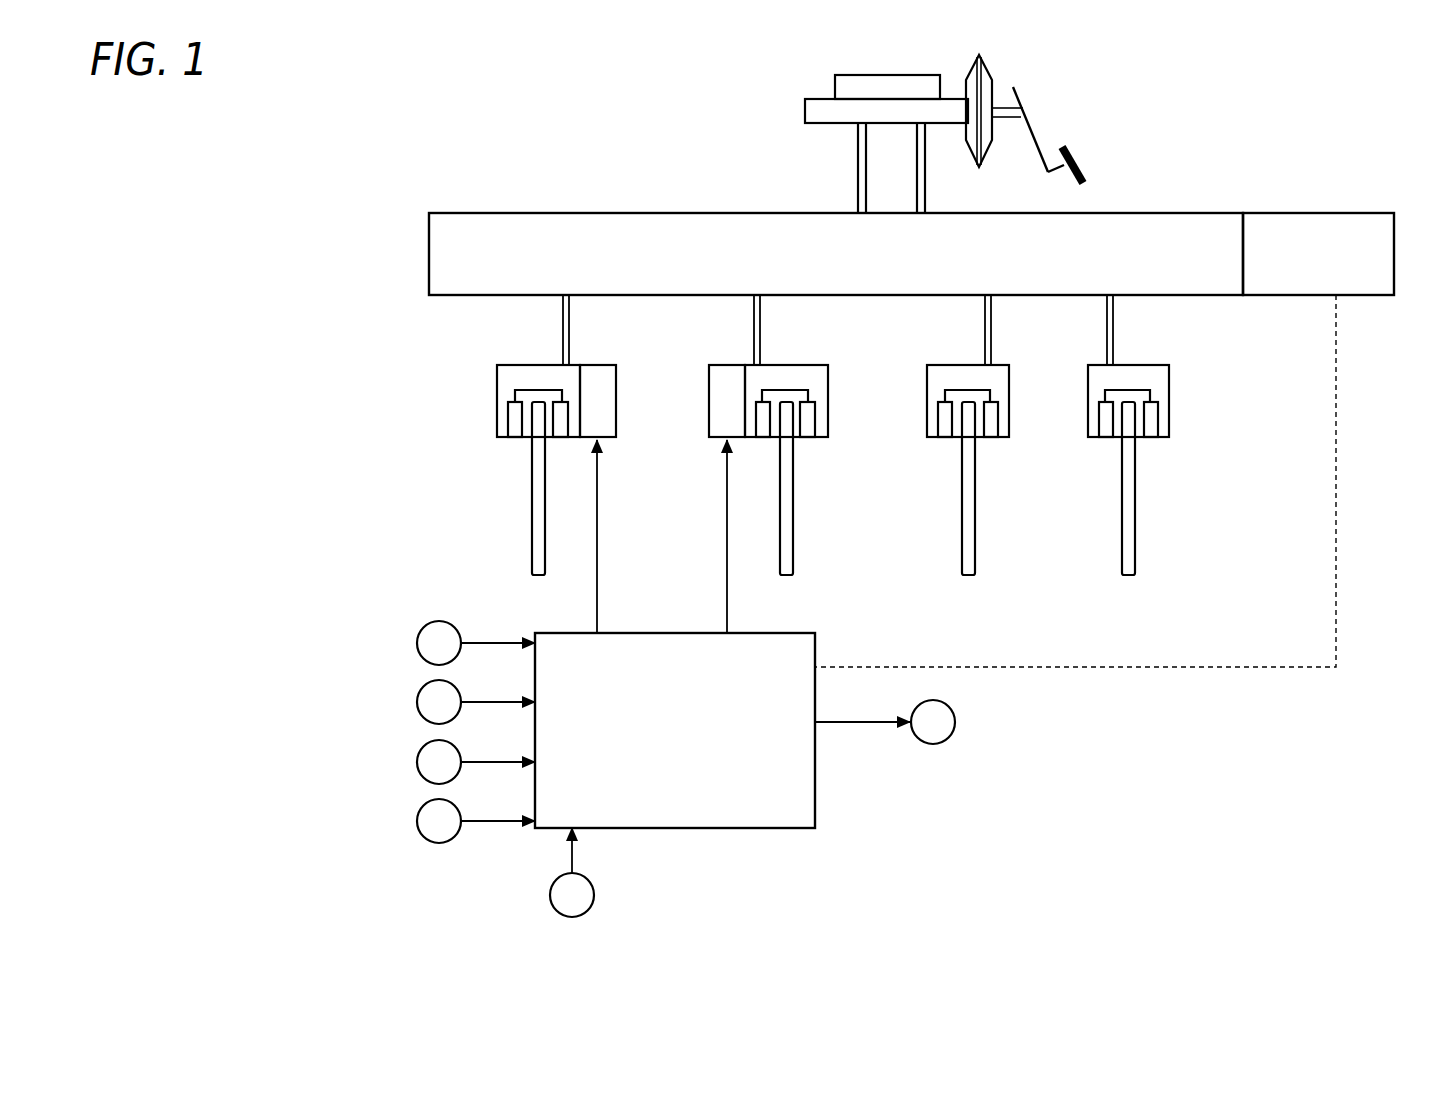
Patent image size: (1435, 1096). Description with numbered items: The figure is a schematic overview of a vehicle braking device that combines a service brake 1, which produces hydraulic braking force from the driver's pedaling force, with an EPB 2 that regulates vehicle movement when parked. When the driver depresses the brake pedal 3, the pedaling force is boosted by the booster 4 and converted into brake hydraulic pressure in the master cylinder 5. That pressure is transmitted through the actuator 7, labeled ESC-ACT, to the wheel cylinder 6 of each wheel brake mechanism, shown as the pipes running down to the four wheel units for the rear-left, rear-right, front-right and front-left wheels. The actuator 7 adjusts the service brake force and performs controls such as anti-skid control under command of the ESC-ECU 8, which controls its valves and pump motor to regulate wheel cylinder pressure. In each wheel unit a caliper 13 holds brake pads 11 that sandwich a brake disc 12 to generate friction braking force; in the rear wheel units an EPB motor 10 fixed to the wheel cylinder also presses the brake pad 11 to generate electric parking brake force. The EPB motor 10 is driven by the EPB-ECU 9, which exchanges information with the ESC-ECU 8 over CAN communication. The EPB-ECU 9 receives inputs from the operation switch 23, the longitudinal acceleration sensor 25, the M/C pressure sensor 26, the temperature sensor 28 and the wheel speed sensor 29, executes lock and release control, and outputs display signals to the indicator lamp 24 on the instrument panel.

The service brake 1 is at (1060, 91).
The EPB 2 is at (617, 490).
The brake pedal 3 is at (1067, 148).
The booster 4 is at (985, 70).
The master cylinder 5 is at (822, 98).
The wheel cylinder 6 is at (572, 363).
The actuator 7 is at (1158, 213).
The ESC-ECU 8 is at (1328, 213).
The EPB-ECU 9 is at (753, 830).
The EPB motor 10 is at (617, 378).
The brake pad 11 is at (515, 440).
The brake disc 12 is at (532, 490).
The caliper 13 is at (527, 361).
The operation switch 23 is at (417, 643).
The indicator lamp 24 is at (955, 720).
The longitudinal acceleration sensor 25 is at (417, 702).
The M/C pressure sensor 26 is at (417, 762).
The temperature sensor 28 is at (417, 821).
The wheel speed sensor 29 is at (594, 893).